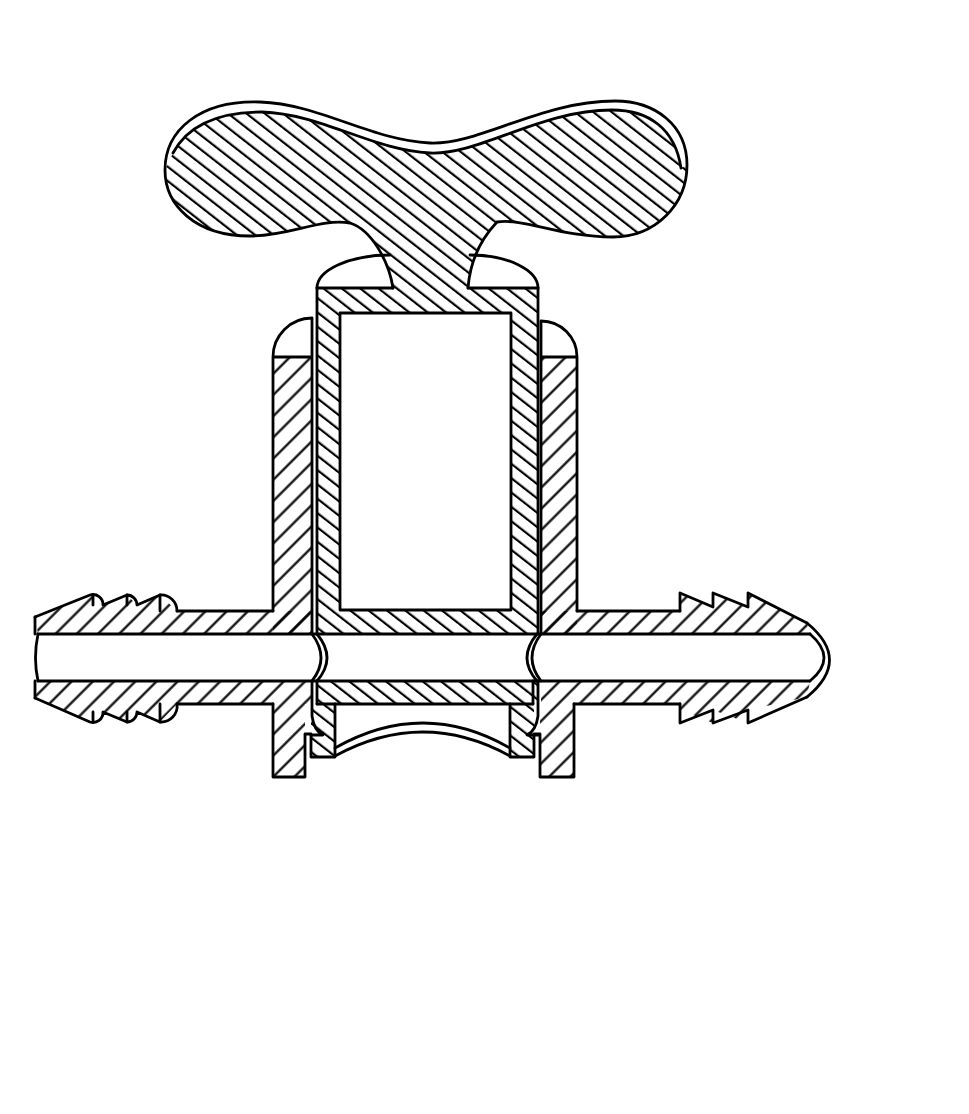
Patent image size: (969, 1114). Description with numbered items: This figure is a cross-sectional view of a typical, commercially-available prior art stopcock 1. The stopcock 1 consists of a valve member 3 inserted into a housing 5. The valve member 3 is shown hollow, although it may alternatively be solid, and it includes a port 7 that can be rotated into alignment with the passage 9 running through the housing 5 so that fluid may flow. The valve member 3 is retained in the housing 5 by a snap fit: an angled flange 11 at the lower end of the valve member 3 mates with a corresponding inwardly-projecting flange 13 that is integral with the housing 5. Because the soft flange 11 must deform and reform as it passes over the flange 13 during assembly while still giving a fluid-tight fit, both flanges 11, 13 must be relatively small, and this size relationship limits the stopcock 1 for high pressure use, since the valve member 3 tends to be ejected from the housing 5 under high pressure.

The stopcock 1 is at (182, 46).
The valve member 3 is at (690, 170).
The housing 5 is at (584, 425).
The port 7 is at (427, 643).
The passage 9 is at (805, 663).
The angled flange 11 is at (525, 755).
The inwardly-projecting flange 13 is at (537, 723).